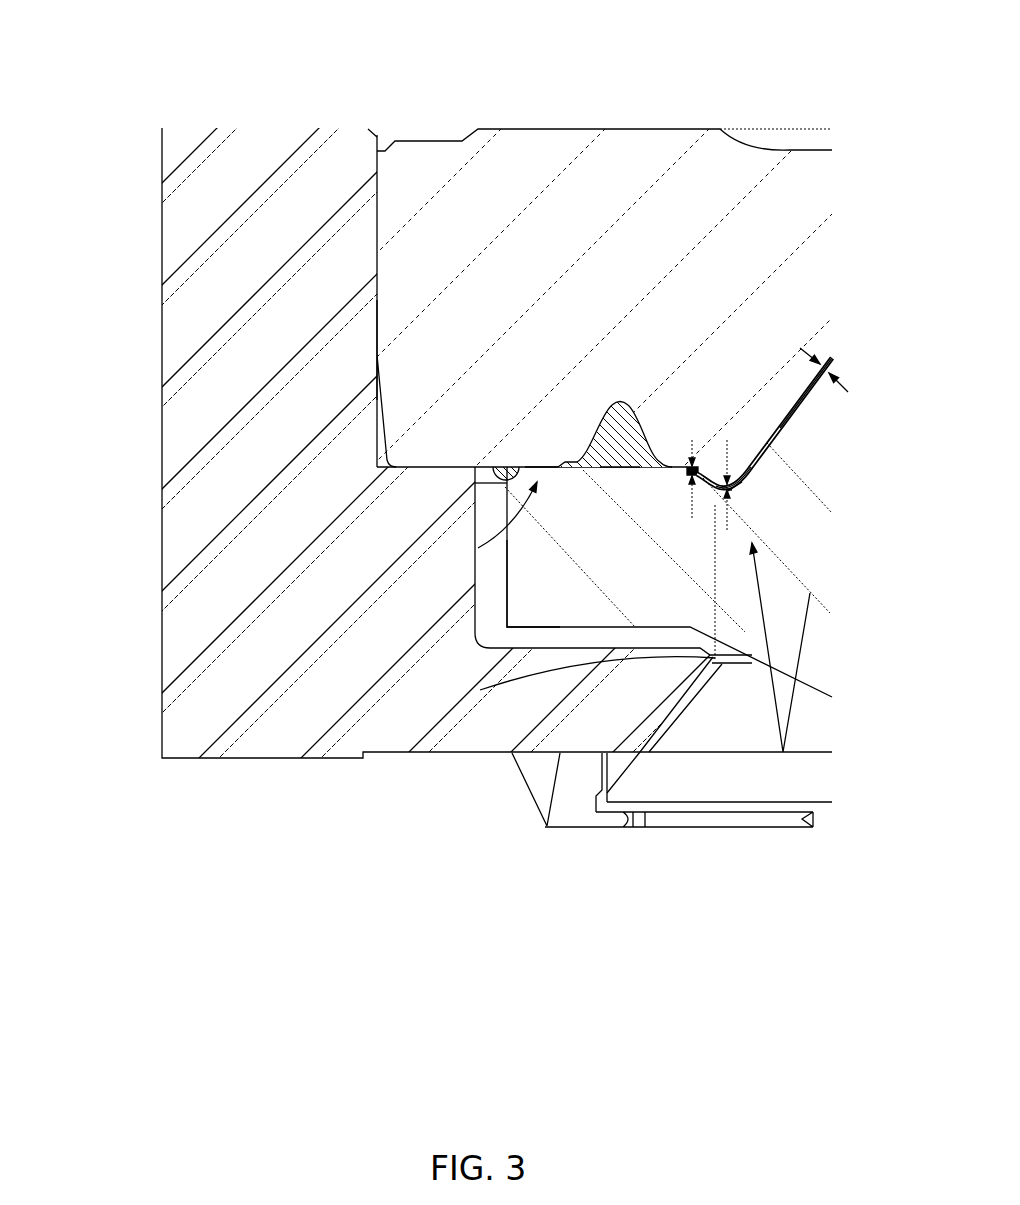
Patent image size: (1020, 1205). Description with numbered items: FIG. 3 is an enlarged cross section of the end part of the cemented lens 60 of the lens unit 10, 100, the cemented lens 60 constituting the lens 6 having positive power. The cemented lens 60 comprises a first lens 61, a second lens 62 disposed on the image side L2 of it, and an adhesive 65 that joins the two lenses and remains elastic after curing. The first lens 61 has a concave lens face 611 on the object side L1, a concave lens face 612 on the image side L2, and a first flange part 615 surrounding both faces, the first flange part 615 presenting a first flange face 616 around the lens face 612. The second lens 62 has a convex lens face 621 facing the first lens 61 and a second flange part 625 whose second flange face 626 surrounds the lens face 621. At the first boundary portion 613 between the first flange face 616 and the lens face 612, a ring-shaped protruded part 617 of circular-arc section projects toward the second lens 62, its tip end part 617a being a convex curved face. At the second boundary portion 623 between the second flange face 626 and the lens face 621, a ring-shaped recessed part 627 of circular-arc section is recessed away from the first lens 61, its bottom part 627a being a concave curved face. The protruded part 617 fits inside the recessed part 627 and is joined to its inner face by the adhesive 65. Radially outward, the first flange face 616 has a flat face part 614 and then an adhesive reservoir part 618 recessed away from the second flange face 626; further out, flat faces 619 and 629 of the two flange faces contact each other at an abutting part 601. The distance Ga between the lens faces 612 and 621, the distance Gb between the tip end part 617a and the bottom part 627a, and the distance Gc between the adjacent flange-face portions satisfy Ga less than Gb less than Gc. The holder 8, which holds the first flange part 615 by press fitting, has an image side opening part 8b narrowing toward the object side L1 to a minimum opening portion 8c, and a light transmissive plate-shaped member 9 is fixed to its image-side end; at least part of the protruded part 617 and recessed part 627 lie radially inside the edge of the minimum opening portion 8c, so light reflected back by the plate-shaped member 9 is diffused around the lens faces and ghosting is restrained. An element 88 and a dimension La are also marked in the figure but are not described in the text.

The lens unit 10 is at (347, 101).
The compressor 100 is at (510, 501).
The holder 8 is at (186, 319).
The image side opening part 8b is at (702, 660).
The minimum opening portion 8c is at (547, 787).
The light transmissive plate-shaped member 9 is at (655, 800).
The pin 88 is at (617, 743).
The lens 6 is at (101, 598).
The cemented lens 60 is at (523, 473).
The first lens 61 is at (427, 422).
The lens face 611 is at (778, 148).
The lens face 612 is at (816, 380).
The first boundary portion 613 is at (742, 485).
The protruded part 617 is at (764, 423).
The tip end part 617a is at (728, 486).
The flat face part 614 is at (687, 466).
The first flange part 615 is at (423, 338).
The first flange face 616 is at (550, 466).
The adhesive reservoir part 618 is at (612, 400).
The flat face 619 is at (528, 466).
The lens face 621 is at (803, 402).
The second boundary portion 623 is at (750, 490).
The recessed part 627 is at (733, 477).
The bottom part 627a is at (740, 500).
The second flange face 626 is at (619, 468).
The flat face 629 is at (503, 486).
The abutting part 601 is at (587, 467).
The second lens 62 is at (473, 587).
The adhesive 65 is at (515, 562).
The second flange part 625 is at (543, 580).
The object side L1 is at (703, 88).
The image side L2 is at (703, 963).
The distance between lens faces Ga is at (824, 363).
The distance between tip end part and bottom part Gb is at (730, 550).
The distance between flange face portions Gc is at (691, 492).
The length dimension La is at (779, 647).